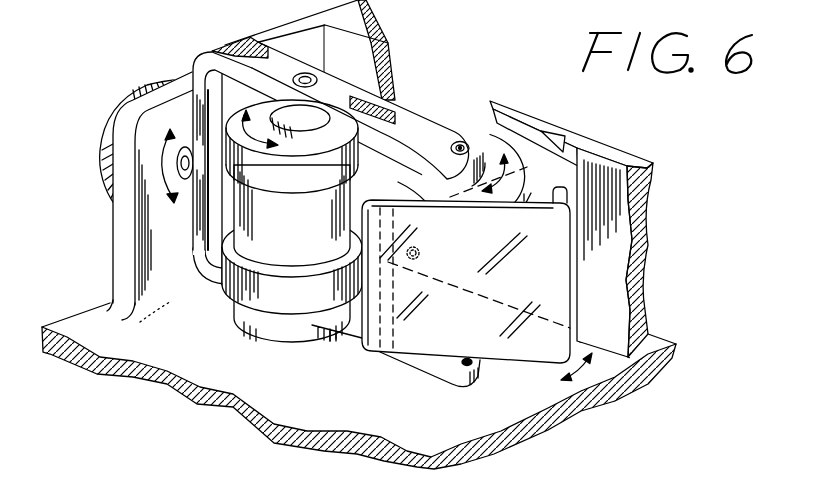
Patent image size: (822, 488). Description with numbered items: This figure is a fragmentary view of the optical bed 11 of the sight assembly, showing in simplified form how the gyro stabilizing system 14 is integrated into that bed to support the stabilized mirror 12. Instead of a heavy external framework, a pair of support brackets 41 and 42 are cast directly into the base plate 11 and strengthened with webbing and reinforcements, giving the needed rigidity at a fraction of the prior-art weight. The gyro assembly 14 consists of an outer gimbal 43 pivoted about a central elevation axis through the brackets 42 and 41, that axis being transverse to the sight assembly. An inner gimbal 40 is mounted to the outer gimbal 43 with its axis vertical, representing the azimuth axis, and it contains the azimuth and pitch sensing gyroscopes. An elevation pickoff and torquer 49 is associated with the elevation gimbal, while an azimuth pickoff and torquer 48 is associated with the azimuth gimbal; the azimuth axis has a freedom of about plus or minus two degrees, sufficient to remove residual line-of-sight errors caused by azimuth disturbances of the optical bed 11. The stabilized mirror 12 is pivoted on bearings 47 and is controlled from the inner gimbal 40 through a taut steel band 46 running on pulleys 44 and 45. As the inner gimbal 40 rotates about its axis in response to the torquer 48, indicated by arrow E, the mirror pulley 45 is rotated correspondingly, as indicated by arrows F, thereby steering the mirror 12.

The optical bed 11 is at (92, 376).
The stabilized mirror 12 is at (531, 358).
The gyro stabilizing system 14 is at (473, 55).
The inner gimbal 40 is at (229, 303).
The support bracket 41 is at (117, 256).
The support bracket 42 is at (578, 154).
The outer gimbal 43 is at (214, 48).
The pulley 44 is at (299, 115).
The mirror pulley 45 is at (482, 205).
The taut steel band 46 is at (437, 122).
The bearings 47 is at (460, 141).
The azimuth pickoff and torquer 48 is at (297, 341).
The elevation pickoff and torquer 49 is at (107, 137).